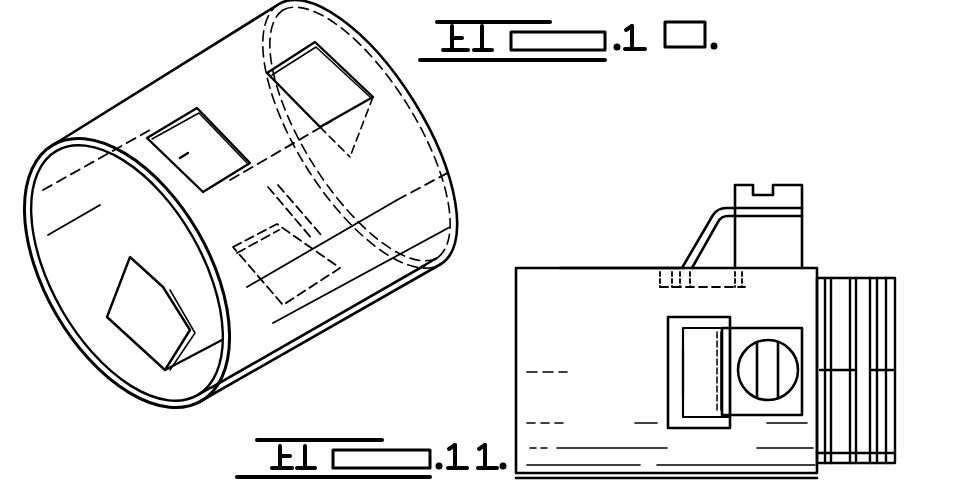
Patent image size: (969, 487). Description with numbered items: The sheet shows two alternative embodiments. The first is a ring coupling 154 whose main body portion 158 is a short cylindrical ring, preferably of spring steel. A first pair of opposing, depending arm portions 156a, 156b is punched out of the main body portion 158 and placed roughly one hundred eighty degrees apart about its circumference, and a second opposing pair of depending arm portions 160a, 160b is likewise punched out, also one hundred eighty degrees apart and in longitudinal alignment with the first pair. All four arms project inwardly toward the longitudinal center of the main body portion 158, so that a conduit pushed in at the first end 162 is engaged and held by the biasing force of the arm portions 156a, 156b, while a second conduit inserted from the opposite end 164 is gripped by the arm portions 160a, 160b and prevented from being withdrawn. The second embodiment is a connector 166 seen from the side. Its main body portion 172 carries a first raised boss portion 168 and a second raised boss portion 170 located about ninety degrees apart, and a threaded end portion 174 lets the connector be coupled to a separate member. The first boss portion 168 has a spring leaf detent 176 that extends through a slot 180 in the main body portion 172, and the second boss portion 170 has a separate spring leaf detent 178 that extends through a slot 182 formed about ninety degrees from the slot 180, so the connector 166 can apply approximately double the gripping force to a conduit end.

In FIG. 10, the coupling 154 is at (264, 221).
In FIG. 10, the depending arm portion 156a is at (207, 187).
In FIG. 10, the depending arm portion 156b is at (130, 290).
In FIG. 10, the main body portion 158 is at (173, 83).
In FIG. 10, the depending arm portion 160a is at (317, 72).
In FIG. 10, the depending arm portion 160b is at (340, 310).
In FIG. 10, the first end 162 is at (82, 297).
In FIG. 10, the opposite end 164 is at (460, 170).
In FIG. 11, the connector 166 is at (580, 266).
In FIG. 11, the first raised boss portion 168 is at (805, 230).
In FIG. 11, the second raised boss portion 170 is at (750, 423).
In FIG. 11, the main body portion 172 is at (635, 268).
In FIG. 11, the threaded end portion 174 is at (840, 278).
In FIG. 11, the spring leaf detent 176 is at (698, 222).
In FIG. 11, the spring leaf detent 178 is at (705, 362).
In FIG. 11, the slot 180 is at (655, 283).
In FIG. 11, the slot 182 is at (675, 395).